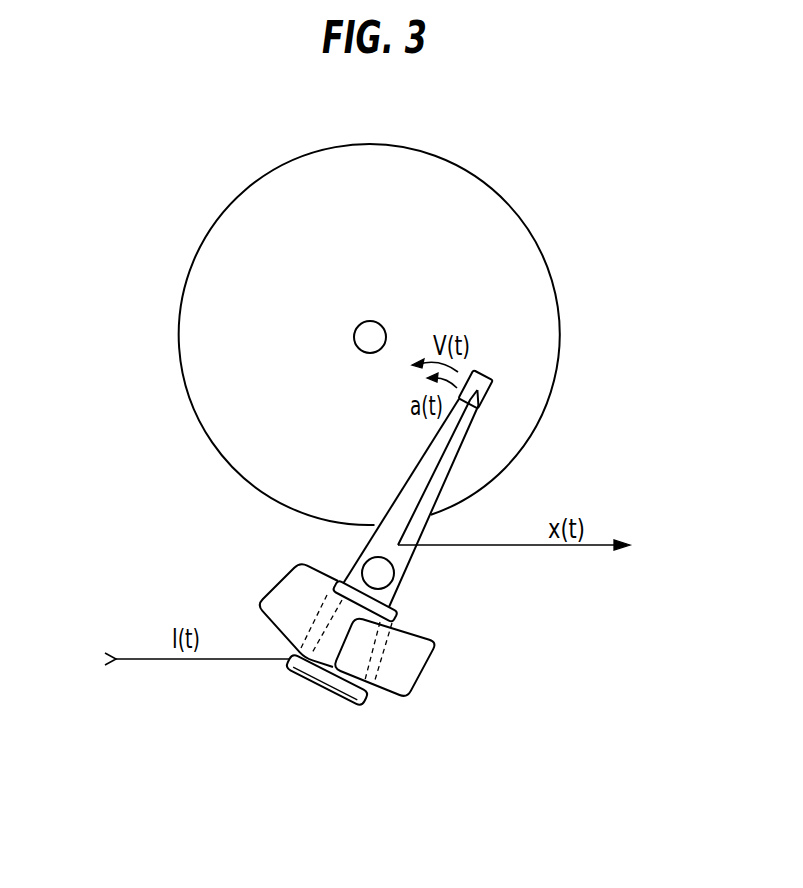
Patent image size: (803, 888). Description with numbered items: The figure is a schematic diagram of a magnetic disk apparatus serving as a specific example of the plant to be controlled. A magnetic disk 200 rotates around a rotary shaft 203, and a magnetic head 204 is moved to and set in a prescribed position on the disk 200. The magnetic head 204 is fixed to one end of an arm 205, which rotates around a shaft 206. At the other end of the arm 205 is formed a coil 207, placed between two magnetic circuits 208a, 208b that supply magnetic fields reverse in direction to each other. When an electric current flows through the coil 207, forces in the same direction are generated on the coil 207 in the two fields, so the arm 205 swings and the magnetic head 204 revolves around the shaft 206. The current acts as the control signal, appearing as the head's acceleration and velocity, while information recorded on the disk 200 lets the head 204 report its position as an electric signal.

The magnetic disk 200 is at (400, 144).
The rotary shaft 203 is at (380, 323).
The magnetic head 204 is at (493, 378).
The arm 205 is at (457, 455).
The shaft 206 is at (371, 574).
The coil 207 is at (348, 695).
The magnetic circuit 208a is at (437, 643).
The magnetic circuit 208b is at (276, 583).